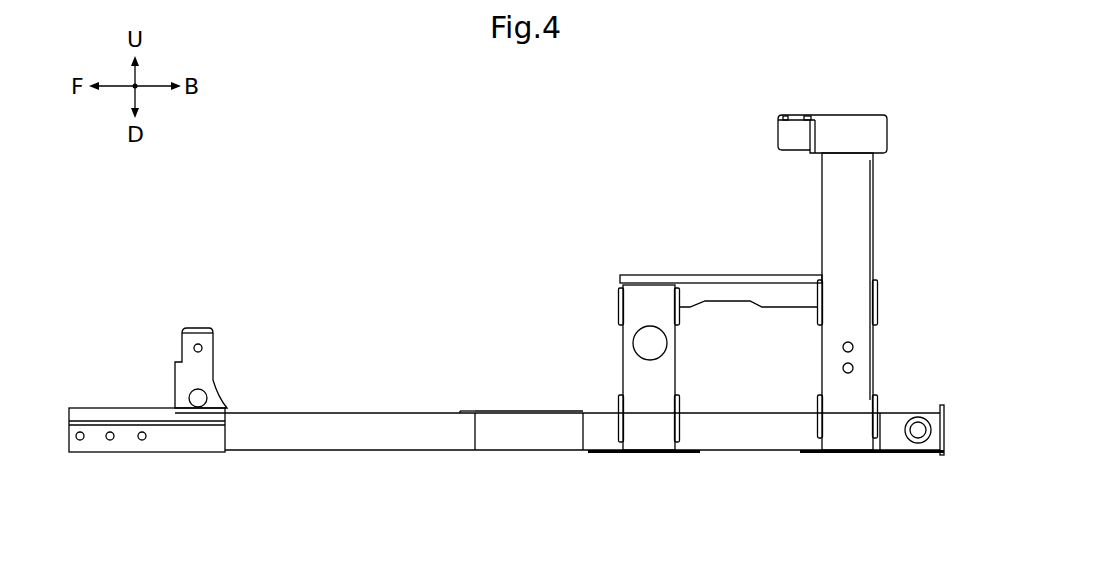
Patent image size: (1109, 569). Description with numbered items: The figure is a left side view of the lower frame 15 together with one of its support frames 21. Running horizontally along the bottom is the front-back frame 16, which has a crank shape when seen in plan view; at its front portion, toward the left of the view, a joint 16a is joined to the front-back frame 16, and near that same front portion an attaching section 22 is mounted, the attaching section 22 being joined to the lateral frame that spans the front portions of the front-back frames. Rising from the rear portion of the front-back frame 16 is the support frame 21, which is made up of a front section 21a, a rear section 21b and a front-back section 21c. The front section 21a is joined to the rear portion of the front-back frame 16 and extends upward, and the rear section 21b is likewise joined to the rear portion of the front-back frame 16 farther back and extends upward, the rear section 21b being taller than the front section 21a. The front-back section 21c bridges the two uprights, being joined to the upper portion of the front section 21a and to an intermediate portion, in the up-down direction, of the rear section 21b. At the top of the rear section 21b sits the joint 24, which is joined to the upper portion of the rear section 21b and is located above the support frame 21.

The lower frame 15 is at (462, 208).
The front-back frame 16 is at (395, 450).
The joint 16a is at (100, 443).
The attaching section 22 is at (190, 355).
The support frame 21 is at (732, 301).
The front section 21a is at (638, 375).
The rear section 21b is at (855, 215).
The front-back section 21c is at (688, 280).
The joint 24 is at (840, 115).